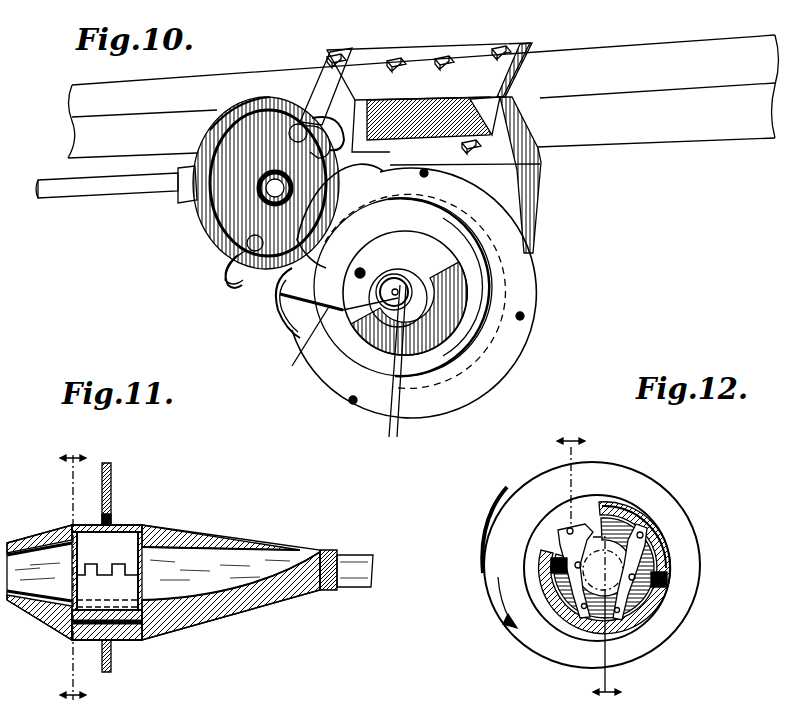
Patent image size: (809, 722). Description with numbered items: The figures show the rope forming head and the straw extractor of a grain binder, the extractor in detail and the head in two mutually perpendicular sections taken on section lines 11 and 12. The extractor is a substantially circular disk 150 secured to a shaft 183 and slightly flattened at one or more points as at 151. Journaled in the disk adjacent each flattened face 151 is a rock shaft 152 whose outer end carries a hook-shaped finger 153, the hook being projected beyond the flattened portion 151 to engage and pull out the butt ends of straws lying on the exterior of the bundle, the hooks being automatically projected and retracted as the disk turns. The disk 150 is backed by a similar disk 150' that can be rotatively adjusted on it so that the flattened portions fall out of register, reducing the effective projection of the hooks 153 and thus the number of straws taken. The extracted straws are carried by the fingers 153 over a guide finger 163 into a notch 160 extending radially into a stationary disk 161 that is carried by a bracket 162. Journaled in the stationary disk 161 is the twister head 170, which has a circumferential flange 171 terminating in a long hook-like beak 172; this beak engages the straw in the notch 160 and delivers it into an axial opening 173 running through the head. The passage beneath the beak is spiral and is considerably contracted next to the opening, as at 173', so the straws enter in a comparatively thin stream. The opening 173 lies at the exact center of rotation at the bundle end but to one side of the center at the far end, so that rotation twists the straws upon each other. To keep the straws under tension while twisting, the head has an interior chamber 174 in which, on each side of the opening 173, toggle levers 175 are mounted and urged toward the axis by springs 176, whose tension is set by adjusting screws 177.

In FIG. 10, the disk 150 is at (245, 190).
In FIG. 10, the backing disk 150' is at (230, 183).
In FIG. 10, the flattened portion 151 is at (228, 253).
In FIG. 10, the rock shaft 152 is at (250, 267).
In FIG. 10, the hook-shaped finger 153 is at (231, 283).
In FIG. 10, the notch 160 is at (296, 346).
In FIG. 10, the stationary disk 161 is at (421, 402).
In FIG. 10, the bracket 162 is at (538, 152).
In FIG. 10, the guide finger 163 is at (287, 294).
In FIG. 10, the twister head 170 is at (470, 284).
In FIG. 11, the twister head 170 is at (52, 627).
In FIG. 12, the twister head 170 is at (650, 627).
In FIG. 11, the circumferential flange 171 is at (112, 652).
In FIG. 12, the circumferential flange 171 is at (677, 558).
In FIG. 10, the hook-like beak 172 is at (298, 300).
In FIG. 11, the hook-like beak 172 is at (113, 480).
In FIG. 12, the hook-like beak 172 is at (502, 515).
In FIG. 11, the axial opening 173 is at (231, 566).
In FIG. 12, the axial opening 173 is at (663, 516).
In FIG. 10, the contracted passage 173' is at (374, 325).
In FIG. 11, the contracted passage 173' is at (39, 570).
In FIG. 11, the interior chamber 174 is at (150, 638).
In FIG. 12, the interior chamber 174 is at (550, 603).
In FIG. 10, the toggle levers 175 is at (397, 364).
In FIG. 11, the toggle levers 175 is at (132, 550).
In FIG. 12, the toggle levers 175 is at (567, 627).
In FIG. 12, the springs 176 is at (652, 597).
In FIG. 12, the adjusting screws 177 is at (670, 575).
In FIG. 10, the shaft 183 is at (92, 200).
In FIG. 12, the section line 11- 11 is at (589, 567).
In FIG. 11, the section line 12- 12 is at (73, 577).